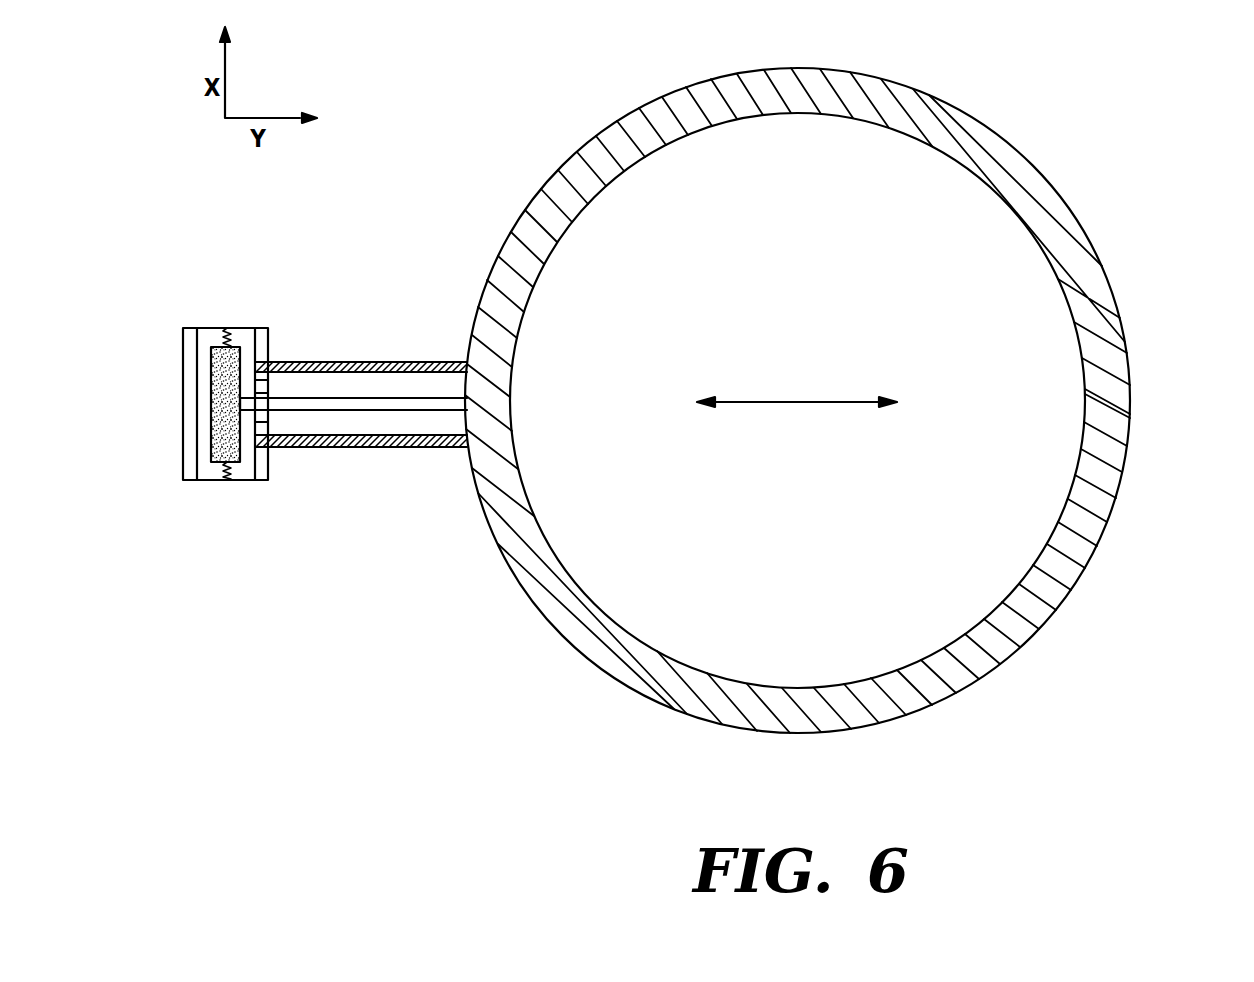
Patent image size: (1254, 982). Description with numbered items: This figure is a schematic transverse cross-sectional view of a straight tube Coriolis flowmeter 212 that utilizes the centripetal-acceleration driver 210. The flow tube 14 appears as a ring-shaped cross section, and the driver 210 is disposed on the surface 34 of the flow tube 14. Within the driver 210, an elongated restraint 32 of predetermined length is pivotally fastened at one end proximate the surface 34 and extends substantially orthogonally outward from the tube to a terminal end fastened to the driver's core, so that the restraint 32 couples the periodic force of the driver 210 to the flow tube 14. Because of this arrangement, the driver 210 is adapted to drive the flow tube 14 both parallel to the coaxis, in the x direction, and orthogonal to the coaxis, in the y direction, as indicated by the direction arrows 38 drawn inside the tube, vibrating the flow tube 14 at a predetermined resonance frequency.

The flow tube 14 is at (1082, 297).
The elongated restraint 32 is at (328, 403).
The surface 34 is at (495, 258).
The direction of vibration 38 is at (797, 402).
The driver 210 is at (308, 495).
The Coriolis flowmeter 212 is at (843, 386).